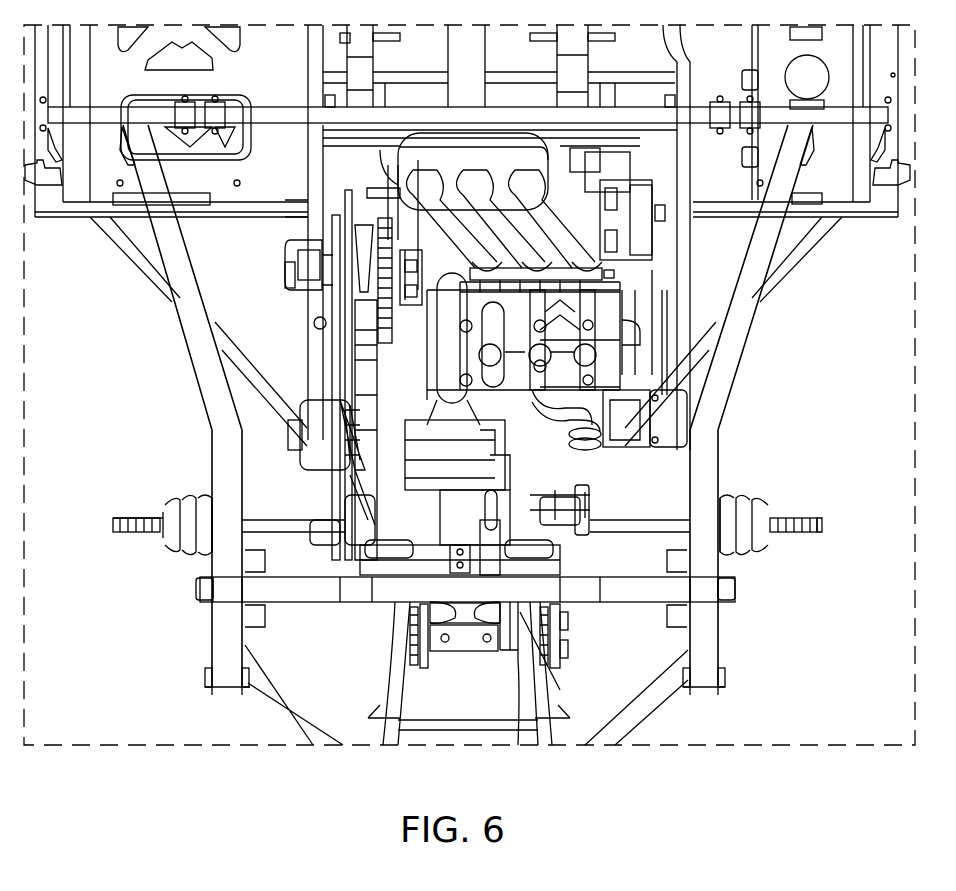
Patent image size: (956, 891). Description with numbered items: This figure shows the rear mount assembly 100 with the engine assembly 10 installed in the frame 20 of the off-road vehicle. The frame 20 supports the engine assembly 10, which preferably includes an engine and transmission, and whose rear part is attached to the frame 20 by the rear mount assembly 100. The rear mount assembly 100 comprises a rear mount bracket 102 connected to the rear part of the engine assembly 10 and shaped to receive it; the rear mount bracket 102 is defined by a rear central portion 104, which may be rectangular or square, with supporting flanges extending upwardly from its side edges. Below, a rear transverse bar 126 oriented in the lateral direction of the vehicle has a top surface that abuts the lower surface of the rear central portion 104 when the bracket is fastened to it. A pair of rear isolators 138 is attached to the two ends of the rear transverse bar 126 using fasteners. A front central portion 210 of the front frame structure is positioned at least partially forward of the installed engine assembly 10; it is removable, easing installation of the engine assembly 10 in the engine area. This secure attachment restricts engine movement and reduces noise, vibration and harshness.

The engine assembly 10 is at (622, 488).
The frame 20 is at (748, 382).
The rear mount assembly 100 is at (472, 670).
The rear mount bracket 102 is at (438, 657).
The rear central portion 104 is at (480, 647).
The rear transverse bar 126 is at (517, 647).
The pair of rear isolators 138 is at (437, 658).
The front central portion 210 is at (578, 114).